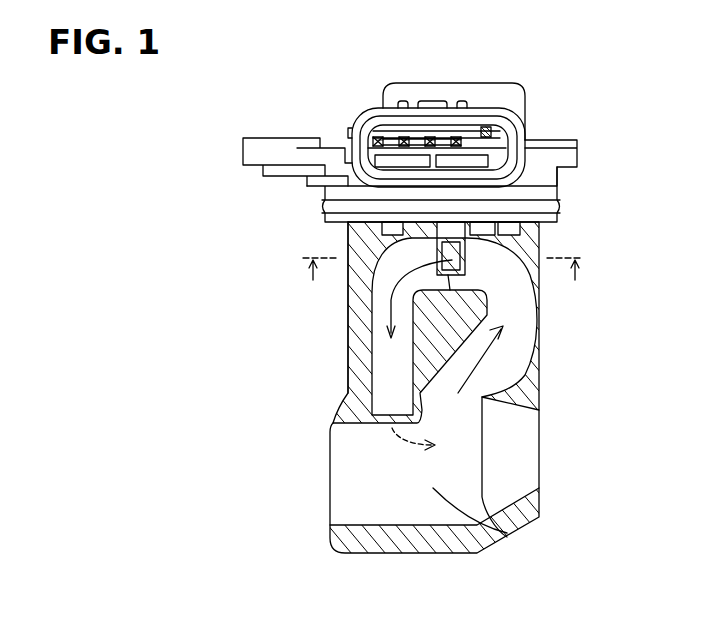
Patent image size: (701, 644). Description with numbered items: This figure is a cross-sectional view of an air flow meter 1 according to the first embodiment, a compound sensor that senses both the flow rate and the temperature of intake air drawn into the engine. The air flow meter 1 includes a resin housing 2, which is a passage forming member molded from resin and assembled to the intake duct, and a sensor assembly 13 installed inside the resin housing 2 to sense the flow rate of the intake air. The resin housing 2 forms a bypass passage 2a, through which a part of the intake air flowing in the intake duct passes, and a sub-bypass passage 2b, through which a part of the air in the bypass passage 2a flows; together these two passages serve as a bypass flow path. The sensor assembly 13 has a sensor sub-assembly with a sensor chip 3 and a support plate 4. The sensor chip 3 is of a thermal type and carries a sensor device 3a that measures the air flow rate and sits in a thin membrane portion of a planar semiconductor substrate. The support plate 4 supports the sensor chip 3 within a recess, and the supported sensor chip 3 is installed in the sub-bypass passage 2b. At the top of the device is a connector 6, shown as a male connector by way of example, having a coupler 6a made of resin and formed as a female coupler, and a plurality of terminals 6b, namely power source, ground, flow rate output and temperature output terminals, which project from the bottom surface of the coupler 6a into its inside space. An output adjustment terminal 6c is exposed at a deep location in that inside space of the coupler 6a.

The air flow meter 1 is at (278, 80).
The resin housing 2 is at (527, 372).
The bypass passage 2a is at (508, 534).
The sub-bypass passage 2b is at (503, 288).
The sensor chip 3 is at (537, 245).
The sensor device 3a is at (472, 262).
The support plate 4 is at (348, 237).
The connector 6 is at (357, 107).
The coupler 6a is at (511, 124).
The terminals 6b is at (458, 136).
The output adjustment terminal 6c is at (487, 124).
The sensor assembly 13 is at (492, 316).